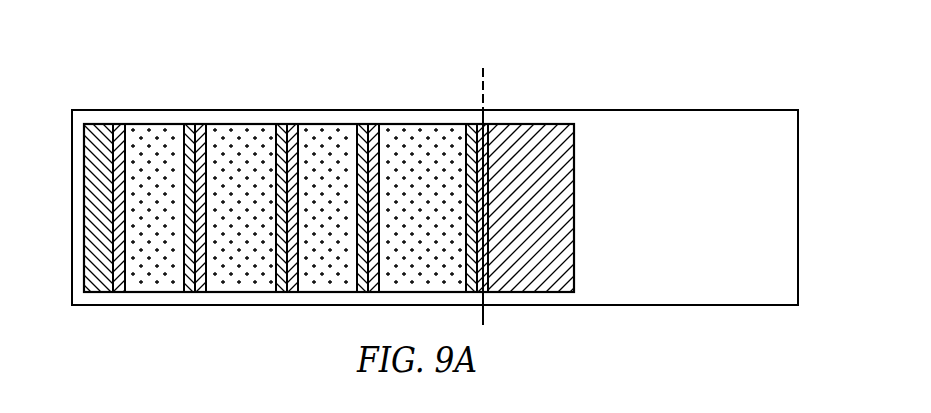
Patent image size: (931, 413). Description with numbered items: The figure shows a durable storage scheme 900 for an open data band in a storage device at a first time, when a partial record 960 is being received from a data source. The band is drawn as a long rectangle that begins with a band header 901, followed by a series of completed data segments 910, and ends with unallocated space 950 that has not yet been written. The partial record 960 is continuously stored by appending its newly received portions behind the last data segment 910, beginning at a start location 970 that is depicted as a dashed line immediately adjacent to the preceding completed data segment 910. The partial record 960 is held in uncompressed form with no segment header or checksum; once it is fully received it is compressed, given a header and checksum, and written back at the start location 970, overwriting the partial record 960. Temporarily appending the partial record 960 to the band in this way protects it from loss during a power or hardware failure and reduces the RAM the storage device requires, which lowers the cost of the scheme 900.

The durable storage scheme 900 is at (112, 33).
The band header 901 is at (97, 124).
The data segments 910 is at (477, 117).
The unallocated space 950 is at (798, 117).
The partial record 960 is at (574, 117).
The start location 970 is at (483, 322).